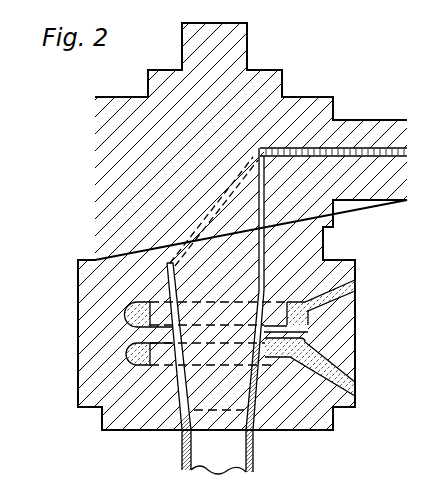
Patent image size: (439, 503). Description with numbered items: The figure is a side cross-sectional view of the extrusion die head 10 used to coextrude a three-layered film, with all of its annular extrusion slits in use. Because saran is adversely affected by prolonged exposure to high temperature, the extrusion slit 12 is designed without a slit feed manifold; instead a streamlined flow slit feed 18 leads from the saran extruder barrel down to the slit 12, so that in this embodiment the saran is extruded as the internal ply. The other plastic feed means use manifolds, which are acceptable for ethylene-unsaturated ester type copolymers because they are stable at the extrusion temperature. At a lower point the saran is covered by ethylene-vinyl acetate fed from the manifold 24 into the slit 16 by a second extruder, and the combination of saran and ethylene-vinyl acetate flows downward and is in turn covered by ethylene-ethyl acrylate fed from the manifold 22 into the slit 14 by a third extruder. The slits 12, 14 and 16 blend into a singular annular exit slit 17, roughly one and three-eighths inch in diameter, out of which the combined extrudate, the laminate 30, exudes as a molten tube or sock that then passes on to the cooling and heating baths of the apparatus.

The extrusion die head 10 is at (97, 173).
The extrusion slit 12 is at (263, 211).
The extrusion slit 14 is at (258, 365).
The extrusion slit 16 is at (300, 327).
The annular exit slit 17 is at (171, 428).
The streamlined flow slit feed 18 is at (216, 210).
The manifold 22 is at (323, 346).
The manifold 24 is at (358, 306).
The laminate 30 is at (254, 461).